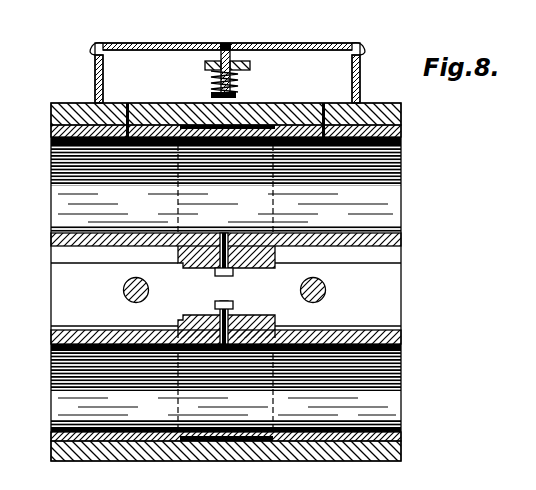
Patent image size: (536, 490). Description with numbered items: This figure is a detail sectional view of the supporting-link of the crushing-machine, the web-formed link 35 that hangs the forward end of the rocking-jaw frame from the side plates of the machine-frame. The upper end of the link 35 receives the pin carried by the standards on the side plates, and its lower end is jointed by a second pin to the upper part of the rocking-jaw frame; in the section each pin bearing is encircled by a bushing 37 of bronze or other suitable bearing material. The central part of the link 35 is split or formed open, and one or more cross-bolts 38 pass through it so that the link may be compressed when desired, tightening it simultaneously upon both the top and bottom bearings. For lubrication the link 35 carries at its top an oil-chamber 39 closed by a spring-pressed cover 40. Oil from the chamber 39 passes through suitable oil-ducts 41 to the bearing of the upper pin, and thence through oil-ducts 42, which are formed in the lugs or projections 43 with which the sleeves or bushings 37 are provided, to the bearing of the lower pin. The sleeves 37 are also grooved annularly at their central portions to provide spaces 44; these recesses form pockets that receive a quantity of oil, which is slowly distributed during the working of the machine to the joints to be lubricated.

The web-formed link 35 is at (396, 265).
The bushing 37 is at (394, 127).
The cross-bolt 38 is at (115, 283).
The oil-chamber 39 is at (346, 60).
The spring-pressed cover 40 is at (354, 40).
The oil-duct 41 is at (316, 97).
The oil-duct 42 is at (226, 268).
The lug 43 is at (181, 260).
The space 44 is at (238, 117).